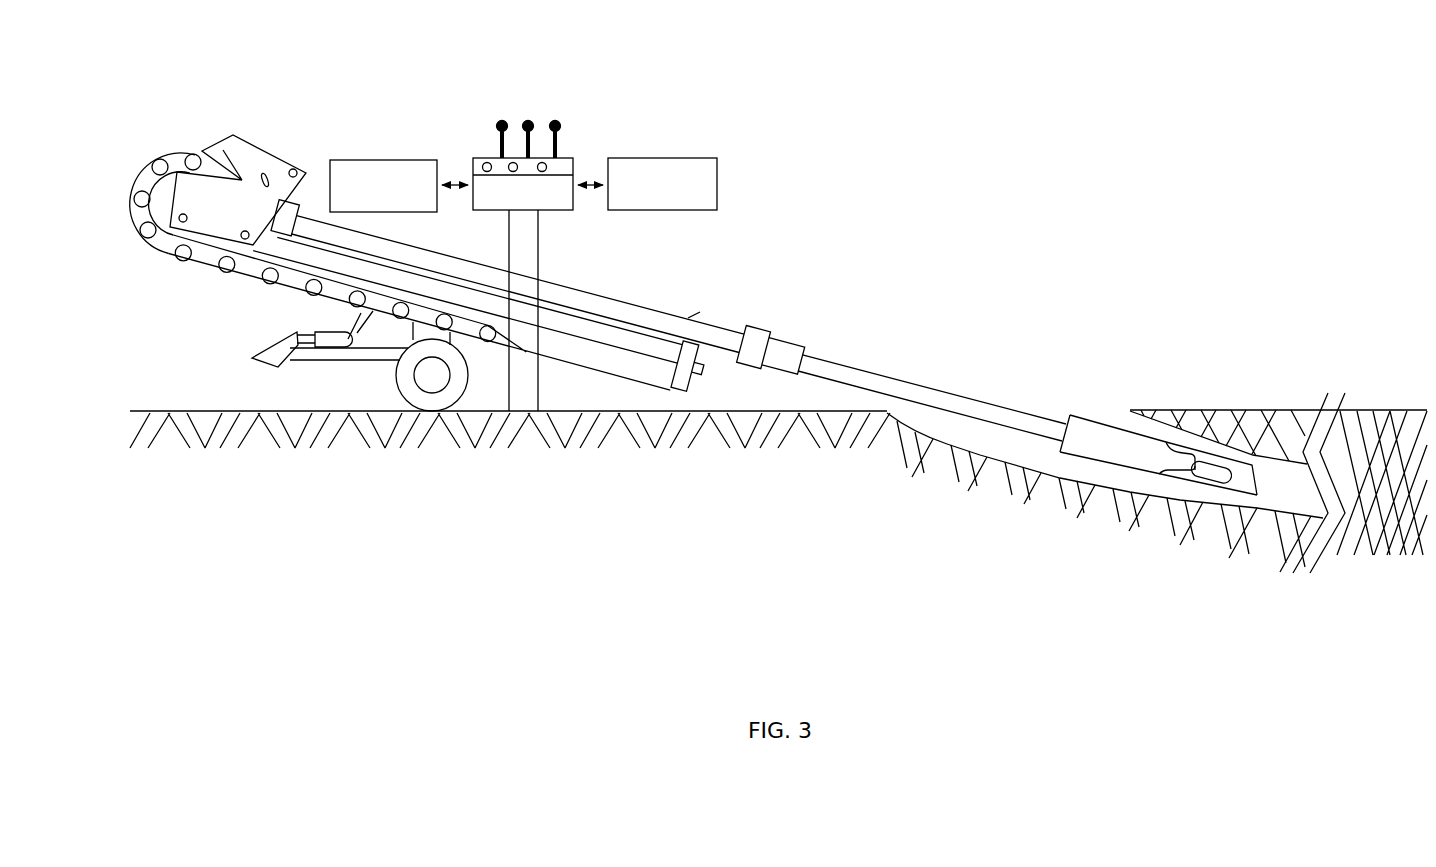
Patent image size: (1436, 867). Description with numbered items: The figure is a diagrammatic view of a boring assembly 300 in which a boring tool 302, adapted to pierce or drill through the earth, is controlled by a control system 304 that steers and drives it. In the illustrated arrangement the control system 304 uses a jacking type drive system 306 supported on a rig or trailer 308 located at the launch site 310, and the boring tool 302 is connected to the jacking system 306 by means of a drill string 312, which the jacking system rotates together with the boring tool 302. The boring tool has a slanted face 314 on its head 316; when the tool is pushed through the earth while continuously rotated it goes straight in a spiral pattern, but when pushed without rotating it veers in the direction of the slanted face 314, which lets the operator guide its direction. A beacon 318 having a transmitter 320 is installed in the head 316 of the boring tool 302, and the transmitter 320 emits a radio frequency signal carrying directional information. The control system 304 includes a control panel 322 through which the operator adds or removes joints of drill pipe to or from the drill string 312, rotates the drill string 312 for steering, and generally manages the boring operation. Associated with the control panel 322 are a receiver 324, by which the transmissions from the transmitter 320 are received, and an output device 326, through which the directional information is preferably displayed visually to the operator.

The boring assembly 300 is at (808, 74).
The boring tool 302 is at (1100, 415).
The control system 304 is at (808, 309).
The jacking type drive system 306 is at (248, 284).
The rig or trailer 308 is at (365, 365).
The launch site 310 is at (1154, 468).
The drill string 312 is at (918, 383).
The slanted face 314 is at (1250, 464).
The head 316 is at (1201, 459).
The beacon 318 is at (1220, 487).
The transmitter 320 is at (1197, 487).
The control panel 322 is at (558, 210).
The receiver 324 is at (385, 160).
The output device 326 is at (666, 158).